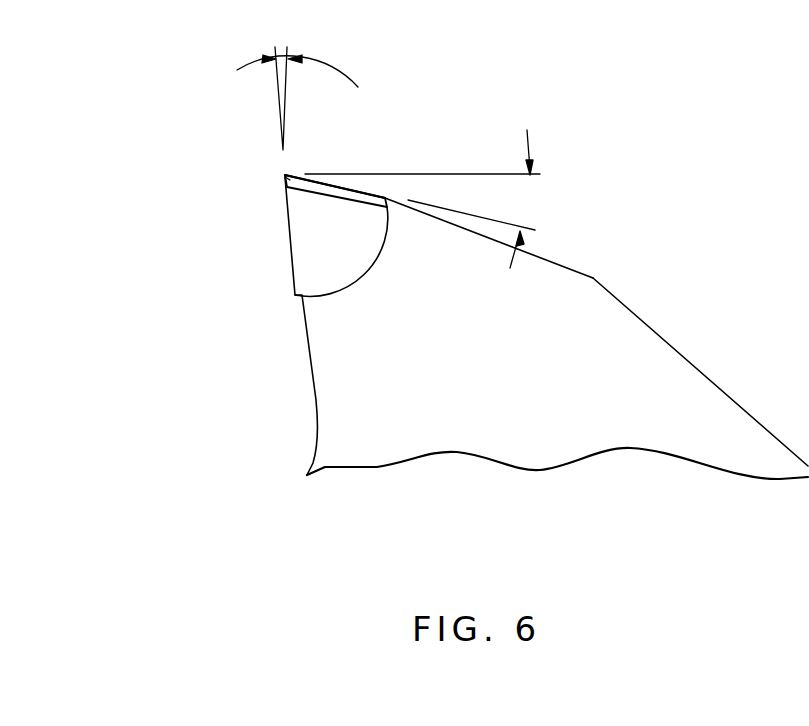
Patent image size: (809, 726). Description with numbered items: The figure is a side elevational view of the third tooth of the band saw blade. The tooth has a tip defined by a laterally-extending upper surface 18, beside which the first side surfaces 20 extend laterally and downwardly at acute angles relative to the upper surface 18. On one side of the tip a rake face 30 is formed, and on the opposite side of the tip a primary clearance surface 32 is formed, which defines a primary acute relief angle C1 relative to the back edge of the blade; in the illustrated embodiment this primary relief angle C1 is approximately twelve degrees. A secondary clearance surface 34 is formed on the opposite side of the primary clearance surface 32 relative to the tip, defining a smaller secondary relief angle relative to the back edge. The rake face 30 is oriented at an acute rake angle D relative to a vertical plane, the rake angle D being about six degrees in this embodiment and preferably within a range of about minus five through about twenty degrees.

The upper surface 18 is at (283, 176).
The first side surfaces 20 is at (323, 192).
The rake face 30 is at (288, 255).
The primary clearance surface 32 is at (367, 195).
The secondary clearance surface 34 is at (545, 256).
The primary acute relief angle C1 is at (428, 199).
The rake angle D is at (278, 98).